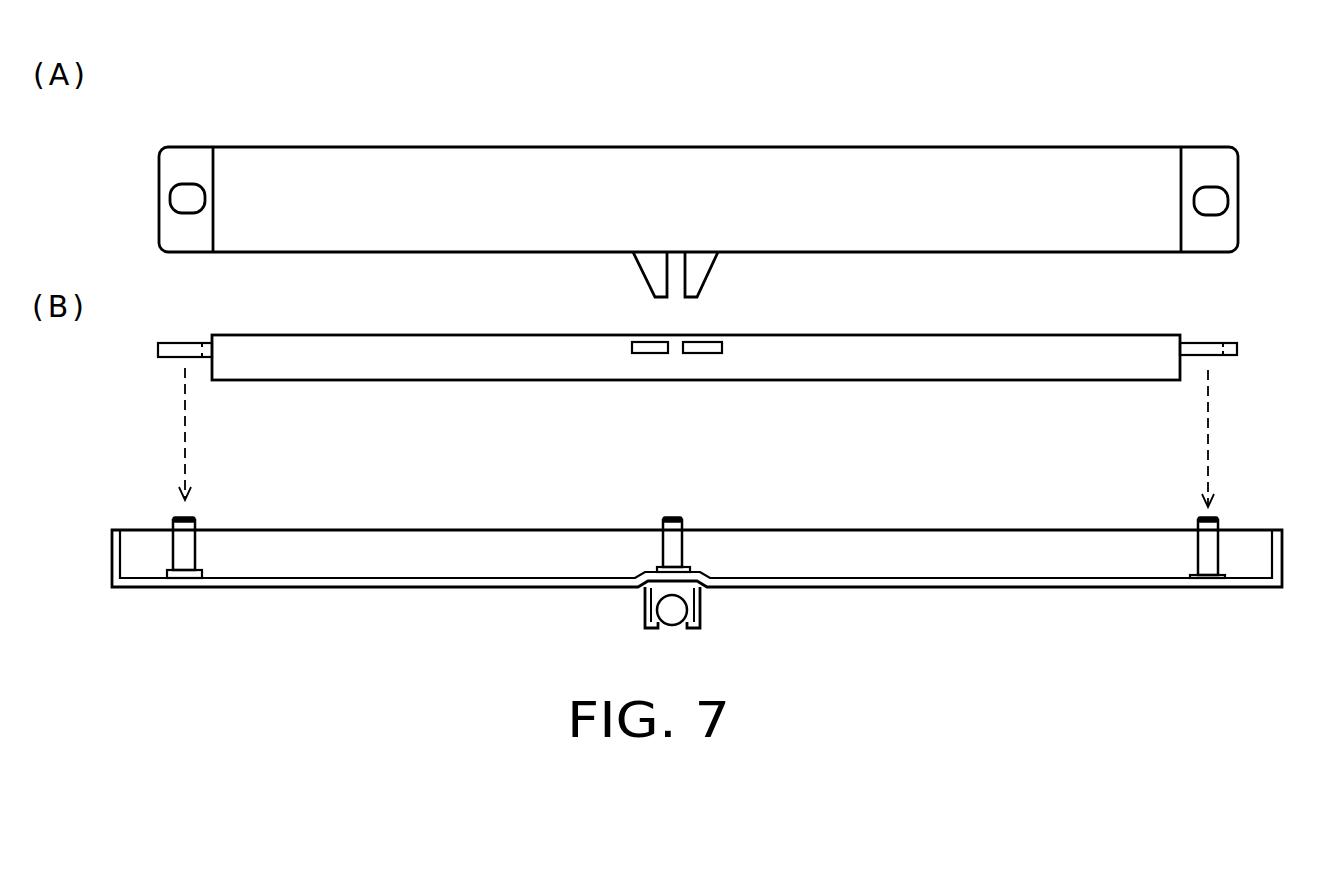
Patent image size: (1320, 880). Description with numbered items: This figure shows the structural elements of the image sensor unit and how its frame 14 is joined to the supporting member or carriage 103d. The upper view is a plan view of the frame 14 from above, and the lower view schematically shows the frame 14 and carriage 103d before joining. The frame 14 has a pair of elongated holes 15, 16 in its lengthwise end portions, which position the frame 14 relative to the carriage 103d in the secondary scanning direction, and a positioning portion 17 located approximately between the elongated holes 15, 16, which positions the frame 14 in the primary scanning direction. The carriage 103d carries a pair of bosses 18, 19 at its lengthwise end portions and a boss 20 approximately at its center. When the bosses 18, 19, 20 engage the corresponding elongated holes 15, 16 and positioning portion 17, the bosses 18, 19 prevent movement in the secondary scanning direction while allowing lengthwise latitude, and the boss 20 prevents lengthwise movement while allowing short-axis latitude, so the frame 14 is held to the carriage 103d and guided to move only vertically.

The frame 14 is at (799, 167).
The elongated hole 15 is at (183, 203).
The elongated hole 16 is at (1220, 200).
The positioning portion 17 is at (673, 278).
The boss 18 is at (197, 518).
The boss 19 is at (1197, 520).
The boss 20 is at (678, 517).
The carriage 103d is at (950, 587).